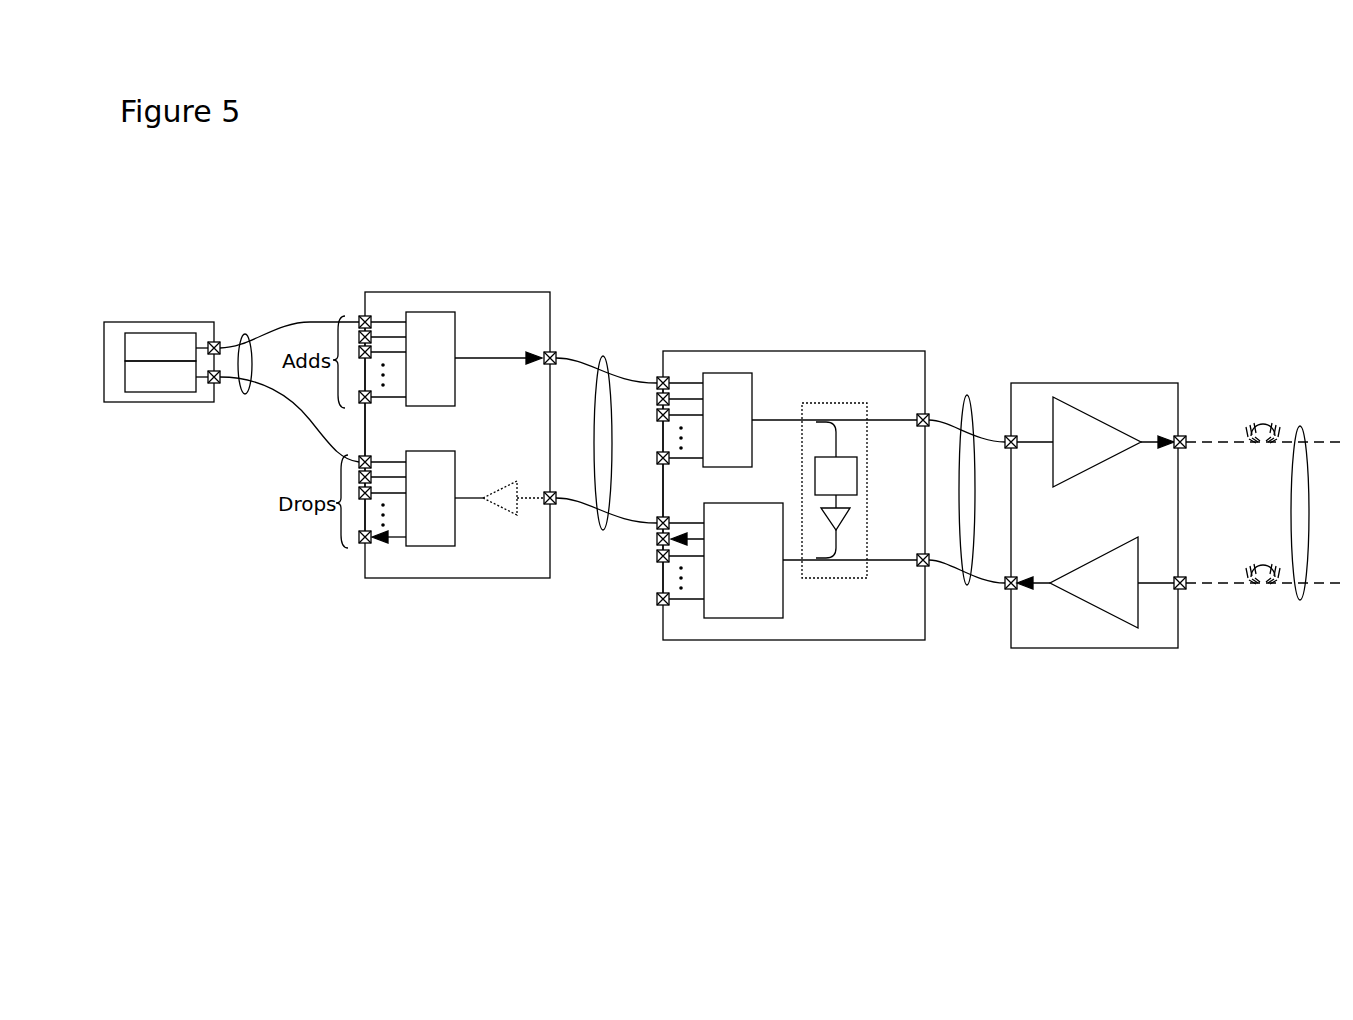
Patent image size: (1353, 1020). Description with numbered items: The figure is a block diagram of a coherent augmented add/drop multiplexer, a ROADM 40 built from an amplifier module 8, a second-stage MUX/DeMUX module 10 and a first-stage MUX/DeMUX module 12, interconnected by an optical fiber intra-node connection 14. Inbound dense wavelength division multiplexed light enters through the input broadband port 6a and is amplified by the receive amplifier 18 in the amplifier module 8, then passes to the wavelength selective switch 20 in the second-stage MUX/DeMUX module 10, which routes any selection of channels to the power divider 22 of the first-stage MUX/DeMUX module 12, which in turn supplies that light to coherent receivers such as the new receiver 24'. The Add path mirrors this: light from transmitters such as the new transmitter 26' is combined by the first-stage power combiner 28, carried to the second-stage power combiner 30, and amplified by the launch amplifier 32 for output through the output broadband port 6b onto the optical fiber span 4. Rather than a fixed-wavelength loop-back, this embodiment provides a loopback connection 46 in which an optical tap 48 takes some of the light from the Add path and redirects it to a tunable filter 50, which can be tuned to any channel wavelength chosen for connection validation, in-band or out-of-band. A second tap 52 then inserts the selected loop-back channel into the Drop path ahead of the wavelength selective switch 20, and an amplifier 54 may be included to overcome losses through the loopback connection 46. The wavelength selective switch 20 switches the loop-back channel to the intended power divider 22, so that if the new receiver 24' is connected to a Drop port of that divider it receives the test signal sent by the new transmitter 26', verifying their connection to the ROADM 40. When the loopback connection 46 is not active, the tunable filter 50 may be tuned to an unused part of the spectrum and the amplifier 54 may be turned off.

The ROADM 40 is at (1009, 231).
The new transmitter 26' is at (160, 343).
The new receiver 24' is at (172, 400).
The first-stage MUX/DeMUX module 12 is at (512, 292).
The first-stage power combiner 28 is at (455, 338).
The power divider 22 is at (455, 470).
The optical fiber intra-node connection 14 is at (603, 358).
The second-stage MUX/DeMUX module 10 is at (822, 351).
The second-stage power combiner 30 is at (793, 420).
The wavelength selective switch 20 is at (793, 560).
The loopback connection 46 is at (861, 403).
The optical tap 48 is at (825, 431).
The tunable filter 50 is at (857, 472).
The amplifier 54 is at (850, 518).
The second tap 52 is at (831, 564).
The amplifier module 8 is at (1088, 383).
The launch amplifier 32 is at (1118, 432).
The receive amplifier 18 is at (1088, 565).
The output broadband port 6b is at (1186, 435).
The input broadband port 6a is at (1186, 576).
The optical fiber span 4 is at (1300, 427).